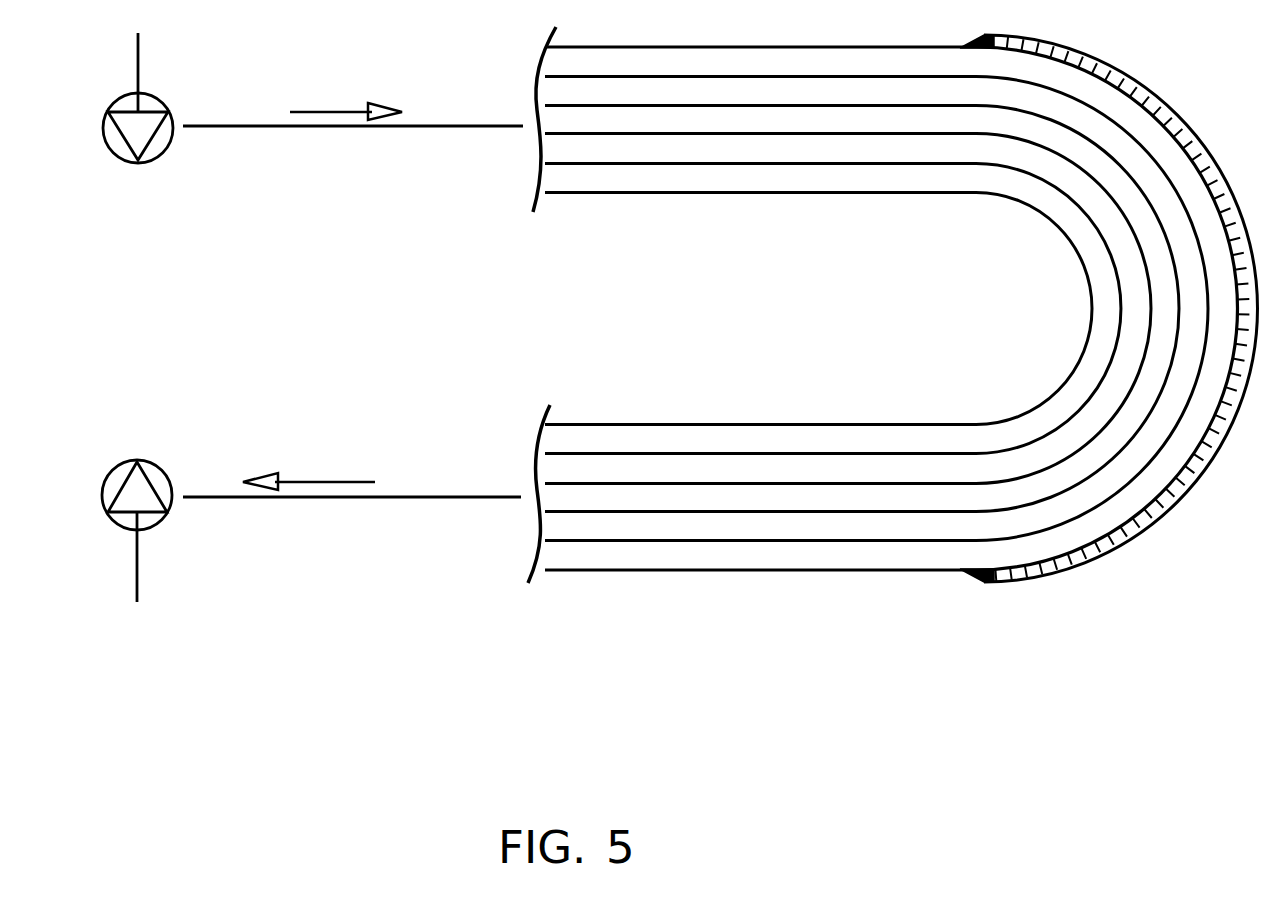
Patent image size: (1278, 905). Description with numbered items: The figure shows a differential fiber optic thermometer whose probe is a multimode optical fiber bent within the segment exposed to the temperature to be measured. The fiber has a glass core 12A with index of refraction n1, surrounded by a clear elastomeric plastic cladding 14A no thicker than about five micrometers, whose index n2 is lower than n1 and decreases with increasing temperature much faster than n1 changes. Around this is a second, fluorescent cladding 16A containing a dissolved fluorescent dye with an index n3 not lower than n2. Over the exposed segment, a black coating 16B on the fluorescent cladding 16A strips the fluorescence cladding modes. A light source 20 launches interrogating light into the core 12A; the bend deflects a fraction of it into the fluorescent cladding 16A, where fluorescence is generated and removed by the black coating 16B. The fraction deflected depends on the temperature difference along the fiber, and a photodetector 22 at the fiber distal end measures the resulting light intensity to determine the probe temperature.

The glass core 12A is at (1117, 187).
The clear elastomeric plastic cladding 14A is at (1128, 265).
The second cladding 16A is at (1072, 378).
The black coating 16B is at (1108, 308).
The light source 20 is at (99, 109).
The photodetector 22 is at (95, 487).